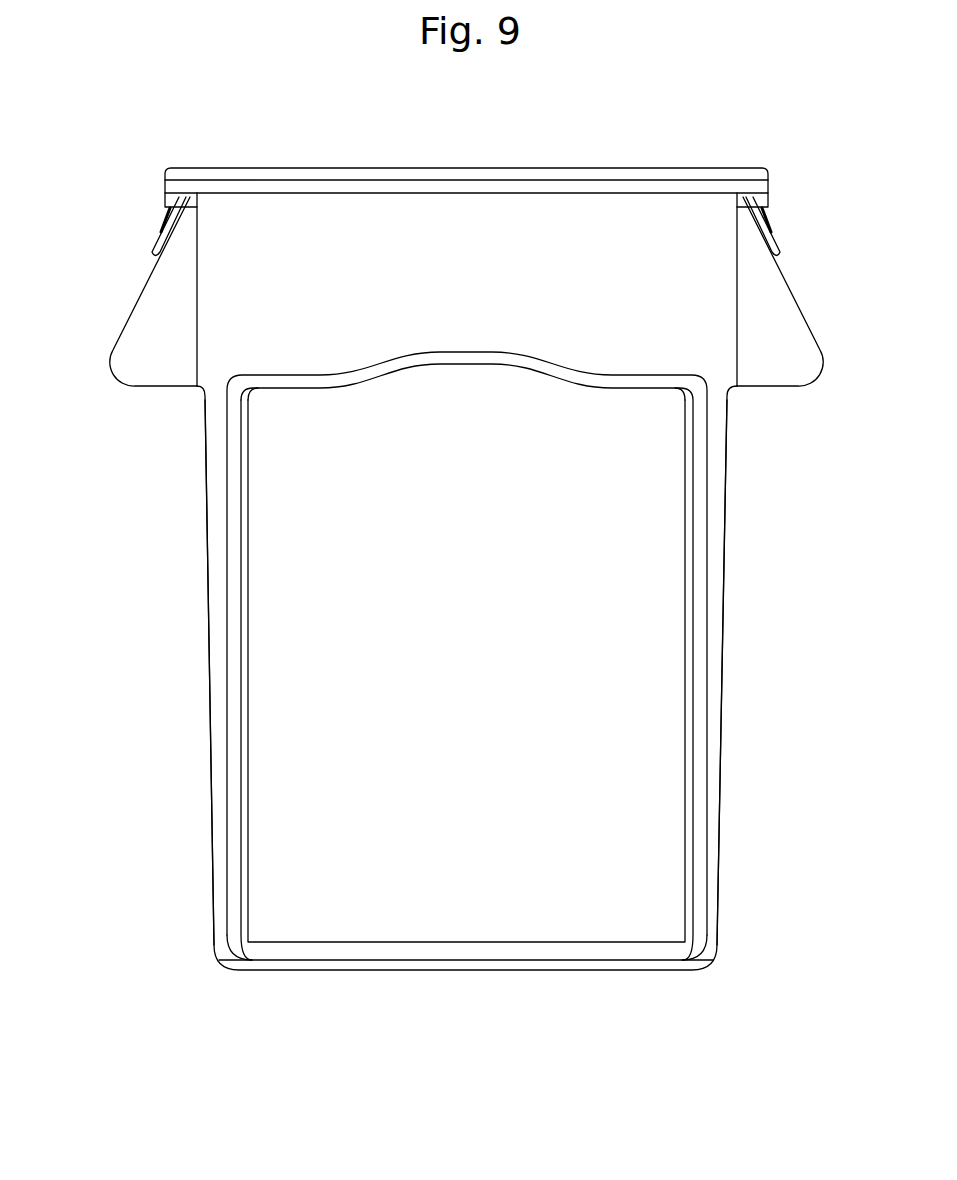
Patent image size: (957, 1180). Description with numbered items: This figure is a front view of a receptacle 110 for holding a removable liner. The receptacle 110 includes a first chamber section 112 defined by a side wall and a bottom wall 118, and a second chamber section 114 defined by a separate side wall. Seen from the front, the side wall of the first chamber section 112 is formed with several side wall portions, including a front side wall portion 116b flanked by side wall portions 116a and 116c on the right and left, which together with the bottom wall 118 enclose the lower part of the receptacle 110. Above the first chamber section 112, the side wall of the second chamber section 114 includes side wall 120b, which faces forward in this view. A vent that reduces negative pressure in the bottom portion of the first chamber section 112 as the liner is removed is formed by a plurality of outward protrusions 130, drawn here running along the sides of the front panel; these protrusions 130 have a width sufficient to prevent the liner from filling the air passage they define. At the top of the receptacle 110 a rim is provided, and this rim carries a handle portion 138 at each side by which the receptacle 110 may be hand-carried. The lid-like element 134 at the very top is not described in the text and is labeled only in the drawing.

The receptacle 110 is at (766, 146).
The first chamber section 112 is at (172, 726).
The second chamber section 114 is at (112, 226).
The side wall portion 116a is at (720, 829).
The side wall portion 116b is at (486, 743).
The side wall portion 116c is at (211, 836).
The bottom wall 118 is at (455, 972).
The side wall 120b is at (466, 333).
The outward protrusions 130 is at (209, 623).
The lid 134 is at (565, 168).
The handle portion 138 is at (112, 358).